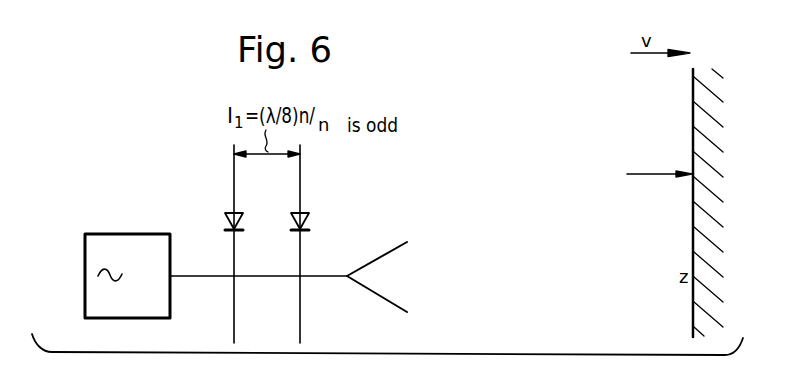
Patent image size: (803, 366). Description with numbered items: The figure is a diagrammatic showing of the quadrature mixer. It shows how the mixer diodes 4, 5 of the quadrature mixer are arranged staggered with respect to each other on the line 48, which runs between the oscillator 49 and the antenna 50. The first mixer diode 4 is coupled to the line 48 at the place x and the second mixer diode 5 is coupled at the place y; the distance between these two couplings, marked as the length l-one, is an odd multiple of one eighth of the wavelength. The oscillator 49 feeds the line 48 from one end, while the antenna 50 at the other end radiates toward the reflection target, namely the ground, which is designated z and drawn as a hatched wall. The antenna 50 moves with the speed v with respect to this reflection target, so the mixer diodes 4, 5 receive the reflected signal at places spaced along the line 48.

The oscillator 49 is at (85, 257).
The line 48 is at (328, 278).
The mixer diode 4 is at (225, 221).
The mixer diode 5 is at (310, 222).
The antenna 50 is at (380, 256).